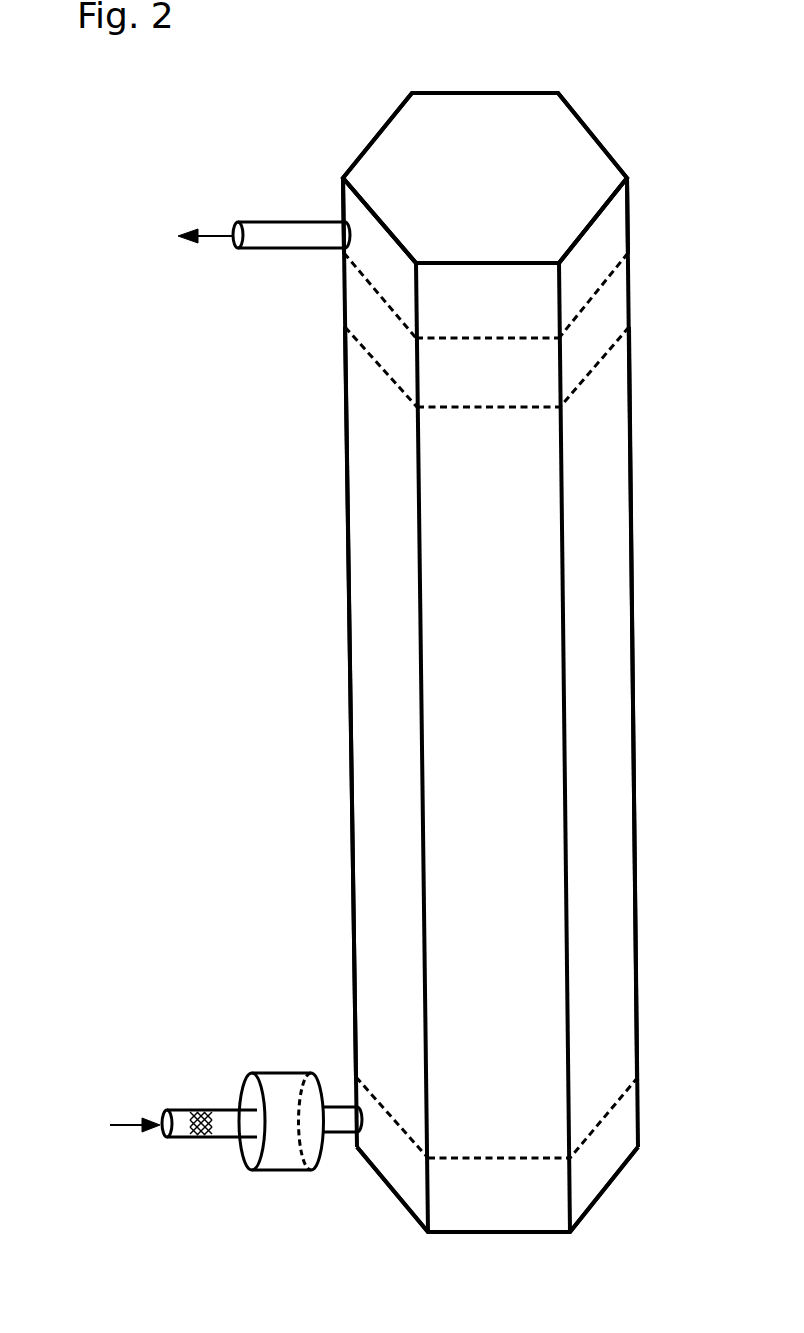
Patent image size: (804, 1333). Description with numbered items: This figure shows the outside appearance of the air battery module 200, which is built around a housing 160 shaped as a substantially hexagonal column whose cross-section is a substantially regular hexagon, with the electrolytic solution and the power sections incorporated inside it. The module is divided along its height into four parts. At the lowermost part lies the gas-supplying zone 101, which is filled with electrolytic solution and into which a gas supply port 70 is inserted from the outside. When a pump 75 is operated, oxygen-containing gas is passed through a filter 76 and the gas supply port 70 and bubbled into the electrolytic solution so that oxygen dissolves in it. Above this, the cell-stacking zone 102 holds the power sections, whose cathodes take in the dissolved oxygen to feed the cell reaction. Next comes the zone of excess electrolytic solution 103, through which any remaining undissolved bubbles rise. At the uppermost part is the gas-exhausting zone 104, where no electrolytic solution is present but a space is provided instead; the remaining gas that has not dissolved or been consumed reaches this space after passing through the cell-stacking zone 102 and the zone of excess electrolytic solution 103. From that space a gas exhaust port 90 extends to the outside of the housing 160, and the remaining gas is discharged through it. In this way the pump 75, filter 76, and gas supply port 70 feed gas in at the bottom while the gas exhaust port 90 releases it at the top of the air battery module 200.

The air battery module 200 is at (460, 36).
The housing 160 is at (577, 157).
The gas-exhausting zone 104 is at (632, 178).
The zone of excess electrolytic solution 103 is at (632, 255).
The cell-stacking zone 102 is at (633, 321).
The gas-supplying zone 101 is at (641, 1077).
The gas exhaust port 90 is at (263, 230).
The gas supply port 70 is at (230, 1128).
The filter 76 is at (207, 1113).
The pump 75 is at (292, 1157).